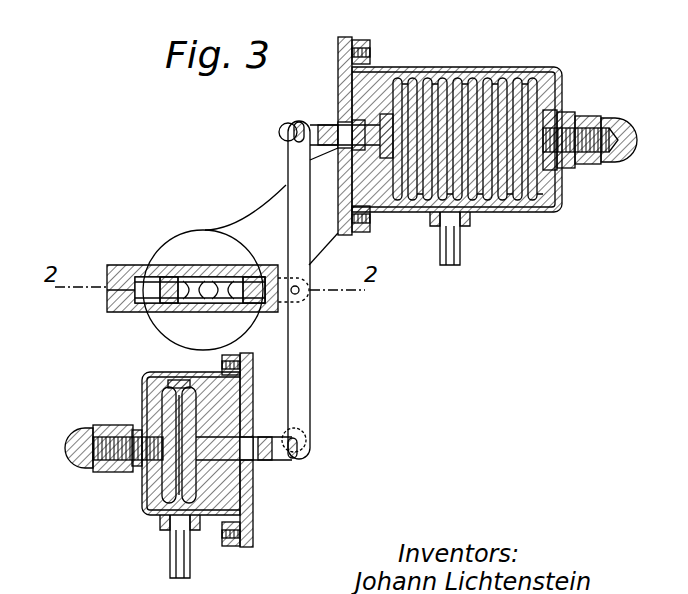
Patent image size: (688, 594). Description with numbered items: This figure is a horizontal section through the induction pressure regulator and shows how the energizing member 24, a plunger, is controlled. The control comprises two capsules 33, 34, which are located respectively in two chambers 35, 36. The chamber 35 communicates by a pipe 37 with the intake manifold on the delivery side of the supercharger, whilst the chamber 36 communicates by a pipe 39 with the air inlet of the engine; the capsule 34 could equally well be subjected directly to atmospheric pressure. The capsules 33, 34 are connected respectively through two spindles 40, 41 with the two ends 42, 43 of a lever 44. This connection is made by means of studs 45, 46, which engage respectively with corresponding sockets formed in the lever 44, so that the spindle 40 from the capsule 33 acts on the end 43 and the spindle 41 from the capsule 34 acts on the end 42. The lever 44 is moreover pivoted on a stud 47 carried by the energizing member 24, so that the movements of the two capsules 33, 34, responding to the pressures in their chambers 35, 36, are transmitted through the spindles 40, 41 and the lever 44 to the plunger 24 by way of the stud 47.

The energizing member 24 is at (255, 280).
The capsule 33 is at (462, 128).
The capsule 34 is at (178, 428).
The chamber 35 is at (420, 208).
The chamber 36 is at (160, 505).
The pipe 37 is at (455, 255).
The pipe 39 is at (178, 566).
The spindle 40 is at (340, 132).
The spindle 41 is at (250, 450).
The end of lever 42 is at (300, 462).
The end of lever 43 is at (296, 122).
The lever 44 is at (300, 362).
The stud 45 is at (285, 132).
The stud 46 is at (300, 448).
The stud 47 is at (300, 294).